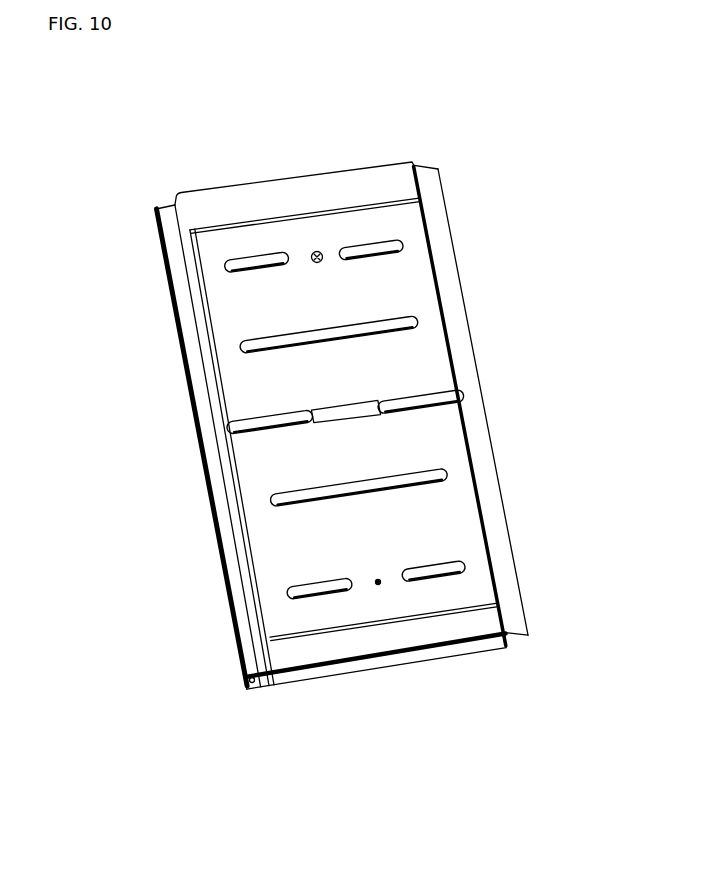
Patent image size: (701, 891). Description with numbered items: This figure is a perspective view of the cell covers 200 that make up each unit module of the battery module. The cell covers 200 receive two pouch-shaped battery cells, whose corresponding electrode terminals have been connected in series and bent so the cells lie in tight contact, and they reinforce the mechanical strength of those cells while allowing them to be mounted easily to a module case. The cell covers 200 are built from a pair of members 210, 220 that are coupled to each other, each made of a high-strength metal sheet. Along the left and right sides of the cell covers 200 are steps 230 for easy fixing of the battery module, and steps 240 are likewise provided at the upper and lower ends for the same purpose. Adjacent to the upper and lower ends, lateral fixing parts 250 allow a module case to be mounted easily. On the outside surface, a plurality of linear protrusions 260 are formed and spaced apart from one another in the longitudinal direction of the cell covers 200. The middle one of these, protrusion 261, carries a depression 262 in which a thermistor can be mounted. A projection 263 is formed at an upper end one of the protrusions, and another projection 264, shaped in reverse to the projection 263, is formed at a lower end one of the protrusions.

The cell covers 200 is at (122, 100).
The member 210 is at (298, 670).
The member 220 is at (383, 670).
The steps 230 is at (236, 552).
The steps 240 is at (332, 190).
The lateral fixing parts 250 is at (473, 600).
The linear protrusions 260 is at (416, 320).
The protrusion 261 is at (460, 397).
The depression 262 is at (330, 413).
The projection 263 is at (317, 250).
The projection 264 is at (380, 584).